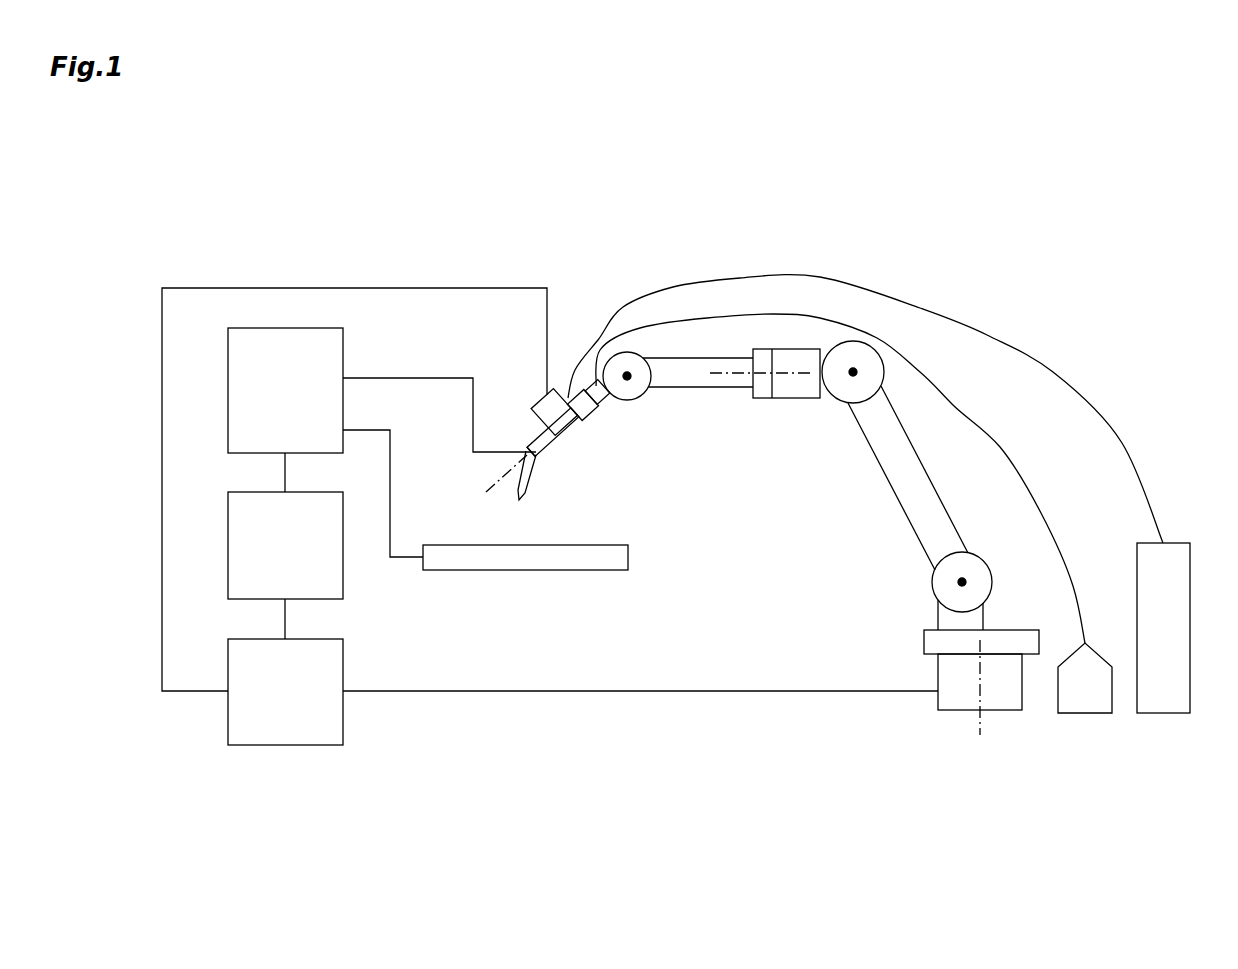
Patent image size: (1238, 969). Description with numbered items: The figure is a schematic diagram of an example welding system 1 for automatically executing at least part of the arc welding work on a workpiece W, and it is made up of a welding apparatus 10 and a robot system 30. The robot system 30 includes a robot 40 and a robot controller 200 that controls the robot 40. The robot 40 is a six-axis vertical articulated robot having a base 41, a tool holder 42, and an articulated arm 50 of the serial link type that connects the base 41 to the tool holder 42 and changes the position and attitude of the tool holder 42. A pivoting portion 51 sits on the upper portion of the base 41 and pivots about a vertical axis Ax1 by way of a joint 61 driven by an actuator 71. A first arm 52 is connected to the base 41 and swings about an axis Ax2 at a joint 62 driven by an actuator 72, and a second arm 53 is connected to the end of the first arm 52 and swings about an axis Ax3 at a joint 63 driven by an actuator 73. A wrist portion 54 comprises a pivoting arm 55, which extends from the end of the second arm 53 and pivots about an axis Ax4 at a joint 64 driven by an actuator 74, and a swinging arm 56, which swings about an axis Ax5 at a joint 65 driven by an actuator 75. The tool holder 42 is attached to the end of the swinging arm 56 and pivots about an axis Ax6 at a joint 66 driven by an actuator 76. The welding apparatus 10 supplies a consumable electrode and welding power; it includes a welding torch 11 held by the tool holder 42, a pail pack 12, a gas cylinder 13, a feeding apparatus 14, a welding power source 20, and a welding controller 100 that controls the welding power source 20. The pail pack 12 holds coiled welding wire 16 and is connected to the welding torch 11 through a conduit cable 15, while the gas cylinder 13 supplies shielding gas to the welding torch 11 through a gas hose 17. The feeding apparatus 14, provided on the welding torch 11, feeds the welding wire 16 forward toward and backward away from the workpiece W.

The welding system 1 is at (648, 240).
The welding apparatus 10 is at (390, 268).
The welding power source 20 is at (343, 343).
The welding controller 100 is at (343, 580).
The robot controller 200 is at (343, 657).
The workpiece W is at (540, 570).
The robot system 30 is at (790, 250).
The wrist portion 54 is at (628, 342).
The axis Ax5 is at (632, 372).
The pivoting arm 55 is at (718, 355).
The second arm 53 is at (773, 400).
The actuator 74 is at (814, 400).
The axis Ax4 is at (725, 372).
The joint 64 is at (755, 400).
The joint 63 is at (878, 337).
The actuator 73 is at (910, 244).
The axis Ax3 is at (860, 372).
The joint 65 is at (650, 395).
The actuator 75 is at (733, 414).
The swinging arm 56 is at (606, 412).
The actuator 76 is at (733, 444).
The joint 66 is at (575, 392).
The feeding apparatus 14 is at (545, 400).
The tool holder 42 is at (586, 435).
The welding torch 11 is at (571, 463).
The welding wire 16 is at (524, 497).
The axis Ax6 is at (497, 480).
The first arm 52 is at (920, 485).
The articulated arm 50 is at (856, 455).
The robot 40 is at (858, 505).
The joint 62 is at (930, 590).
The actuator 72 is at (877, 583).
The axis Ax2 is at (967, 577).
The joint 61 is at (1013, 650).
The pivoting portion 51 is at (923, 643).
The base 41 is at (937, 670).
The actuator 71 is at (882, 660).
The axis Ax1 is at (980, 723).
The conduit cable 15 is at (927, 368).
The gas hose 17 is at (1040, 358).
The pail pack 12 is at (1085, 715).
The gas cylinder 13 is at (1163, 715).